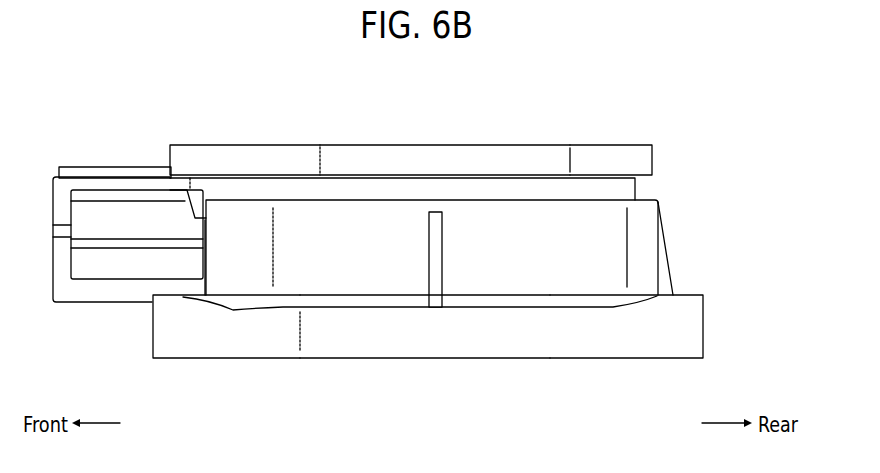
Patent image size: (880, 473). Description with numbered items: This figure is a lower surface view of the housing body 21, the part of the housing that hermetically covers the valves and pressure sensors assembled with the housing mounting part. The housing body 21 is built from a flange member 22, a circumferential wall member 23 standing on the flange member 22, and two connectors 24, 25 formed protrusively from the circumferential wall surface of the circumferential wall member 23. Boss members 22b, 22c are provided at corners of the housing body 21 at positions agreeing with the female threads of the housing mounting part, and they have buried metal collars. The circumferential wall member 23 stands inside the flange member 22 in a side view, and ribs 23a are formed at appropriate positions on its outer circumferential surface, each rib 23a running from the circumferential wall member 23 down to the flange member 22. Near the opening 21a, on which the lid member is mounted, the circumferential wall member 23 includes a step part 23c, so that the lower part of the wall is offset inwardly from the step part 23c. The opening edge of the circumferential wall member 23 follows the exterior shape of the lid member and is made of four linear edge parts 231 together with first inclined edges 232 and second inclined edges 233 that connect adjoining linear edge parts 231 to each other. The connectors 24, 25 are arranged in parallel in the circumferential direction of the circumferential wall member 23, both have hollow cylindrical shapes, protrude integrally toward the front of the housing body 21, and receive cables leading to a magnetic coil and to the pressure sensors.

The housing body 21 is at (394, 233).
The opening 21a is at (411, 118).
The linear edge part 231 is at (437, 153).
The first inclined edge 232 is at (245, 153).
The second inclined edge 233 is at (610, 153).
The flange member 22 is at (428, 350).
The boss member 22b is at (170, 338).
The boss member 22c is at (668, 338).
The circumferential wall member 23 is at (452, 254).
The rib 23a is at (672, 268).
The step part 23c is at (350, 197).
The connector 24 is at (82, 166).
The connector 25 is at (117, 190).